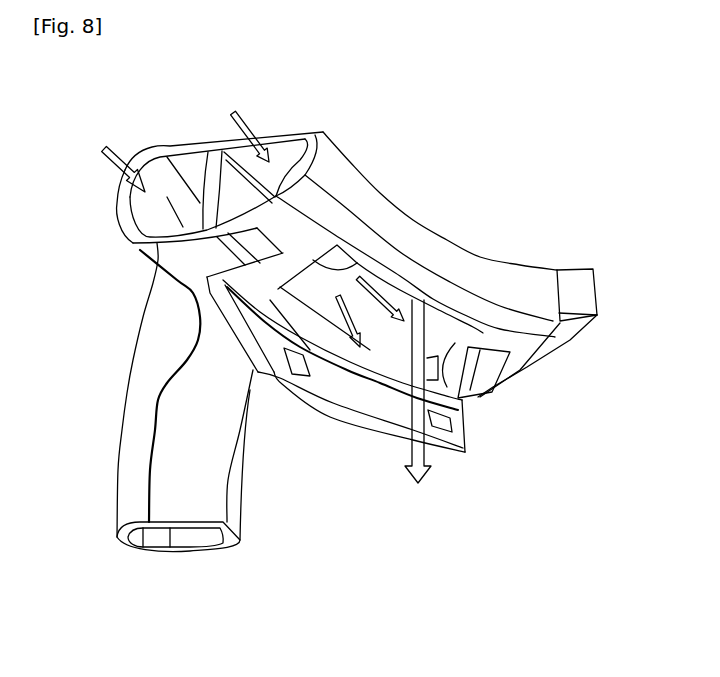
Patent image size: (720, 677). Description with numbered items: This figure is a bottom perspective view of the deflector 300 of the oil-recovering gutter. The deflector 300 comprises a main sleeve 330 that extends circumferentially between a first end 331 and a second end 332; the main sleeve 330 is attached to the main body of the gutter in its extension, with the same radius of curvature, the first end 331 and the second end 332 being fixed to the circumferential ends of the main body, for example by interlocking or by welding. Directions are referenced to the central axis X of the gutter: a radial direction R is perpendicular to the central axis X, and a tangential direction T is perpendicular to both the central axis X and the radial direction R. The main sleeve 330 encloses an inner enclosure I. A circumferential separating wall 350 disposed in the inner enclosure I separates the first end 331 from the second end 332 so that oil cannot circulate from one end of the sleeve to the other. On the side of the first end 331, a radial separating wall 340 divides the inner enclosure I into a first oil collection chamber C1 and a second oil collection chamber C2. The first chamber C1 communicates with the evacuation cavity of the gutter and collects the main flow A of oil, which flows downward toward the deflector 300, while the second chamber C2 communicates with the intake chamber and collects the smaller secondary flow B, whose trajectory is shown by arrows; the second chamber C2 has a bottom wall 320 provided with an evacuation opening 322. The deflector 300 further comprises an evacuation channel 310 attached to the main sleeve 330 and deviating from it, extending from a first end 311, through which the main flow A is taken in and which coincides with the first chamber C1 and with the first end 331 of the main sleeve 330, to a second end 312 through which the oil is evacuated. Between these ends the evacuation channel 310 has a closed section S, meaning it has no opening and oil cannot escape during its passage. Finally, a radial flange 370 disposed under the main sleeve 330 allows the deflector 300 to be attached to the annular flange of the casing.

The deflector 300 is at (575, 405).
The evacuation channel 310 is at (122, 430).
The first end of the evacuation channel 311 is at (167, 150).
The second end of the evacuation channel 312 is at (153, 552).
The bottom wall 320 is at (320, 133).
The evacuation opening 322 is at (367, 257).
The main sleeve 330 is at (480, 273).
The first end of the main sleeve 331 is at (118, 196).
The second end of the main sleeve 332 is at (594, 287).
The radial separating wall 340 is at (150, 278).
The circumferential separating wall 350 is at (458, 400).
The radial flange 370 is at (347, 393).
The main flow A is at (122, 147).
The secondary flow B is at (244, 122).
The inner enclosure I is at (207, 183).
The first oil collection chamber C1 is at (160, 195).
The second oil collection chamber C2 is at (227, 210).
The central axis X is at (113, 348).
The tangential direction T is at (588, 363).
The closed section S is at (175, 537).
The radial direction R is at (206, 558).